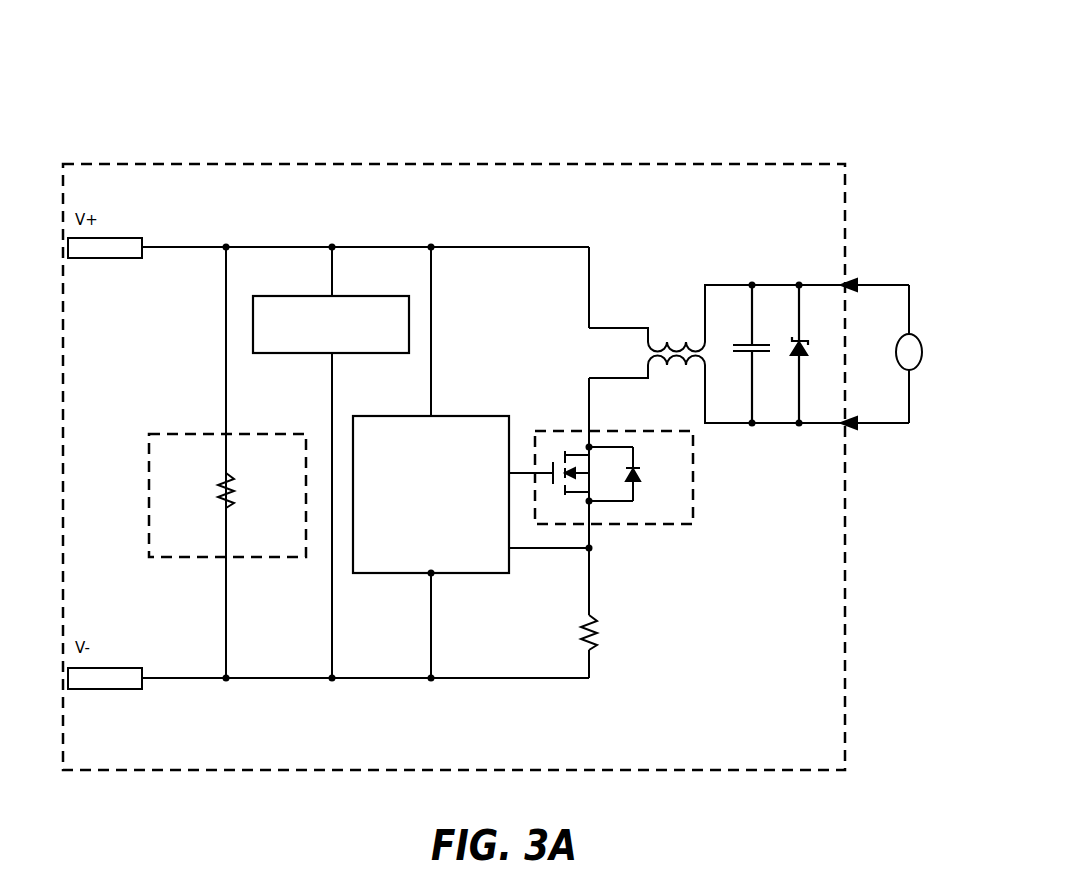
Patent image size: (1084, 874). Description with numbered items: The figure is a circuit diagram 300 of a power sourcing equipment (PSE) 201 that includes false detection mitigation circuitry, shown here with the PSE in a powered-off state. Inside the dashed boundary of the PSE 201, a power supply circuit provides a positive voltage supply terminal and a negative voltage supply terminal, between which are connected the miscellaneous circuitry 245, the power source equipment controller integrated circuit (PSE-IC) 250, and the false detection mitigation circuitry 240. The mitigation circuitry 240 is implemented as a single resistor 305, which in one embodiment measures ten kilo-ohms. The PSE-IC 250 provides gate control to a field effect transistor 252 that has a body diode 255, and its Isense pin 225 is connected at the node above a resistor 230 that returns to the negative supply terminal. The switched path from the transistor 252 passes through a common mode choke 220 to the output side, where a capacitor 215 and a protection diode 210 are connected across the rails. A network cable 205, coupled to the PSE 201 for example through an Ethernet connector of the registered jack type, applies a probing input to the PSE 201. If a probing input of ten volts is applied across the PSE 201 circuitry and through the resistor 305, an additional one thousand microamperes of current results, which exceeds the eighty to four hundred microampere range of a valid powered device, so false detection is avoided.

The circuit diagram 300 is at (814, 60).
The power sourcing equipment 201 is at (838, 193).
The miscellaneous circuitry 245 is at (318, 341).
The power source equipment controller integrated circuit 250 is at (418, 465).
The false detection mitigation circuitry 240 is at (170, 557).
The resistor 305 is at (233, 500).
The field effect transistor 252 is at (693, 478).
The body diode 255 is at (636, 501).
The Isense pin 225 is at (527, 549).
The resistor 230 is at (596, 641).
The common mode choke 220 is at (668, 366).
The capacitor 215 is at (756, 356).
The protection diode 210 is at (803, 356).
The network cable 205 is at (916, 367).